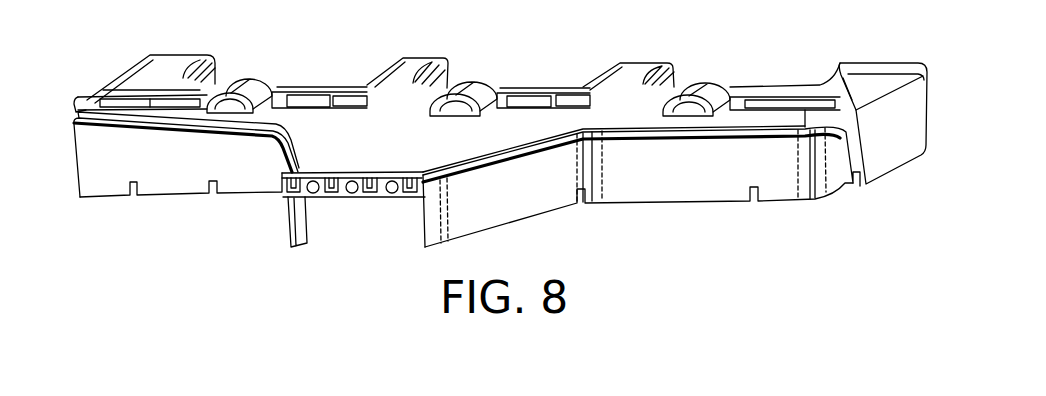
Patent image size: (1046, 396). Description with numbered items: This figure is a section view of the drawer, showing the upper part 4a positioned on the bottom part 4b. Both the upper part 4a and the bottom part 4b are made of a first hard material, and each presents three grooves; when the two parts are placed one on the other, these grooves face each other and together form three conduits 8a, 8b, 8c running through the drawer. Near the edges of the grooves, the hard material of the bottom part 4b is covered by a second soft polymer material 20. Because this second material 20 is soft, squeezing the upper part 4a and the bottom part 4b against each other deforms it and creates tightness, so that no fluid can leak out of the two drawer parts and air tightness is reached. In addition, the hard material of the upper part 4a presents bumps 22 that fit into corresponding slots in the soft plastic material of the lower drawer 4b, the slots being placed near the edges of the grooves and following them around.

The upper part of the drawer 4a is at (520, 102).
The bottom part of the drawer 4b is at (528, 205).
The bumps 22 is at (412, 178).
The second soft polymer material 20 is at (287, 182).
The conduit 8a is at (290, 188).
The conduit 8b is at (352, 194).
The conduit 8c is at (390, 194).